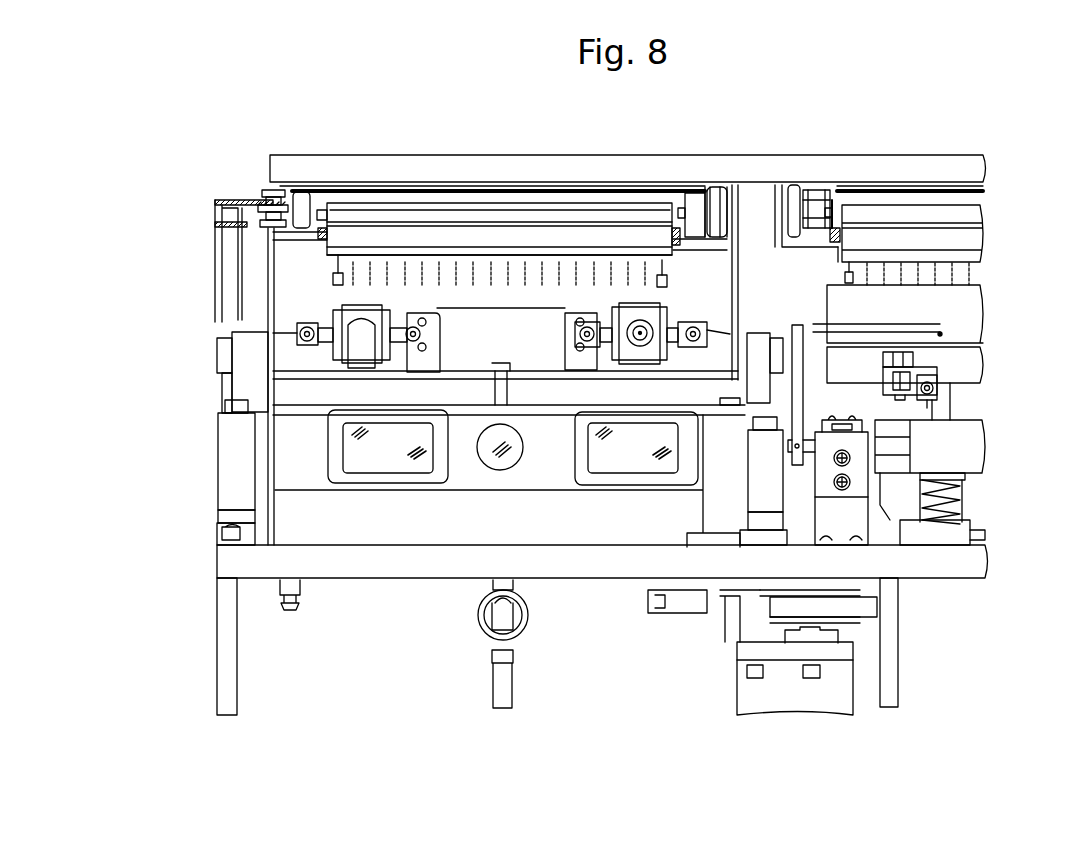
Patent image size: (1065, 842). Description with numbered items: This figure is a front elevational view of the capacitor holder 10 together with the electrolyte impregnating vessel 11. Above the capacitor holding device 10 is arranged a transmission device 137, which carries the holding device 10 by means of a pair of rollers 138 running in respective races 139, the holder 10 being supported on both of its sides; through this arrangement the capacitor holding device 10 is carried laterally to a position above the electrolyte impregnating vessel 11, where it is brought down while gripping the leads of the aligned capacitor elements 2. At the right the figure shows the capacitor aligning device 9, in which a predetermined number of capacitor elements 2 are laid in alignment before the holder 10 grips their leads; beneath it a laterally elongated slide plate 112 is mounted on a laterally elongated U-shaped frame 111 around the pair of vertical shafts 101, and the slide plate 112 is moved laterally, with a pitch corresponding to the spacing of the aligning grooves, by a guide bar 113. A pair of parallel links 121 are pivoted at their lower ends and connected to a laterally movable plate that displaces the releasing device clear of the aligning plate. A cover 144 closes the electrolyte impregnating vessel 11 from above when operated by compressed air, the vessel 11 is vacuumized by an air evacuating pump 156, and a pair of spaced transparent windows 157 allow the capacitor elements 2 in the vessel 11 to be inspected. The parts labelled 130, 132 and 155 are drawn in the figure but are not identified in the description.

The capacitor elements 2 is at (333, 279).
The aligning device 9 is at (988, 303).
The capacitor holder 10 is at (673, 251).
The electrolyte impregnating vessel 11 is at (220, 408).
The vertical shafts 101 is at (962, 500).
The U-shaped frame 111 is at (978, 448).
The slide plate 112 is at (870, 420).
The guide bar 113 is at (895, 432).
The links 121 is at (812, 327).
The drive shaft 130 is at (840, 208).
The top frame beam 132 is at (511, 155).
The transmission device 137 is at (415, 185).
The rollers 138 is at (297, 187).
The races 139 is at (285, 190).
The cover 144 is at (279, 336).
The sight glass 155 is at (542, 417).
The air evacuating pump 156 is at (358, 305).
The transparent windows 157 is at (388, 462).